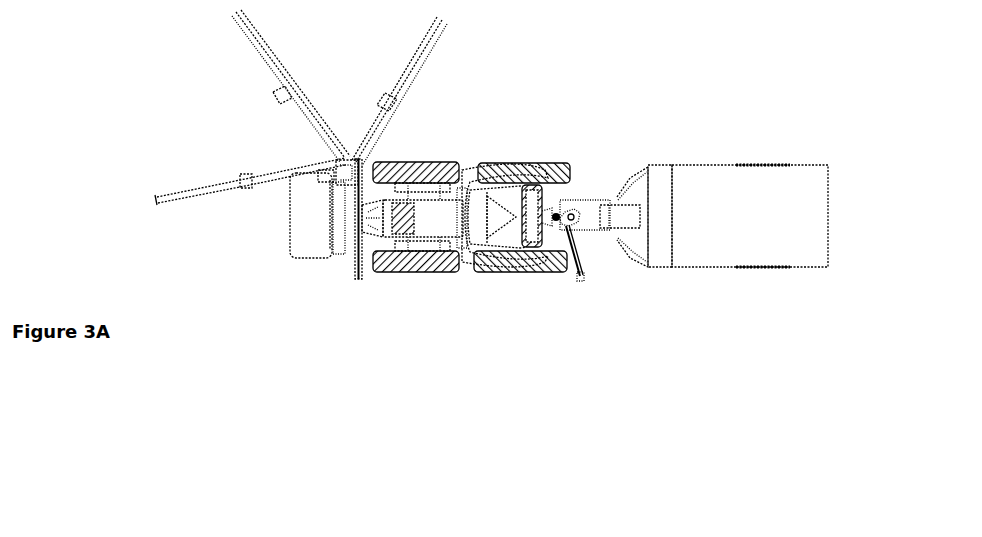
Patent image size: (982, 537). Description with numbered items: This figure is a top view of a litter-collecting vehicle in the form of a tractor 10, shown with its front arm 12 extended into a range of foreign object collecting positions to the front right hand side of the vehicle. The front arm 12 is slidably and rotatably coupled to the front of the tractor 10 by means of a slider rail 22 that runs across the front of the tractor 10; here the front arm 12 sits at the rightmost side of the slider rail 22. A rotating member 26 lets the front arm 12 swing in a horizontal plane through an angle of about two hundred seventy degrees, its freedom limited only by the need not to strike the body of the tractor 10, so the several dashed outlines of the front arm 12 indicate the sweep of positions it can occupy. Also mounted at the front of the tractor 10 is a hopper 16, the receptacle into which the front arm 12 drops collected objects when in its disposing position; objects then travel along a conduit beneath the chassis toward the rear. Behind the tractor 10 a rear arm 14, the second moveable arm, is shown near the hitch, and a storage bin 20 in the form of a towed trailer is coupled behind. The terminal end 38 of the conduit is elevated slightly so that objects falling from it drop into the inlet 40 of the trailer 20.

The tractor 10 is at (510, 146).
The front arm 12 is at (416, 54).
The rear arm 14 is at (574, 280).
The hopper 16 is at (308, 236).
The storage bin 20 is at (784, 200).
The slider rail 22 is at (360, 280).
The rotating member 26 is at (340, 173).
The terminal end 38 is at (624, 224).
The inlet 40 is at (636, 187).